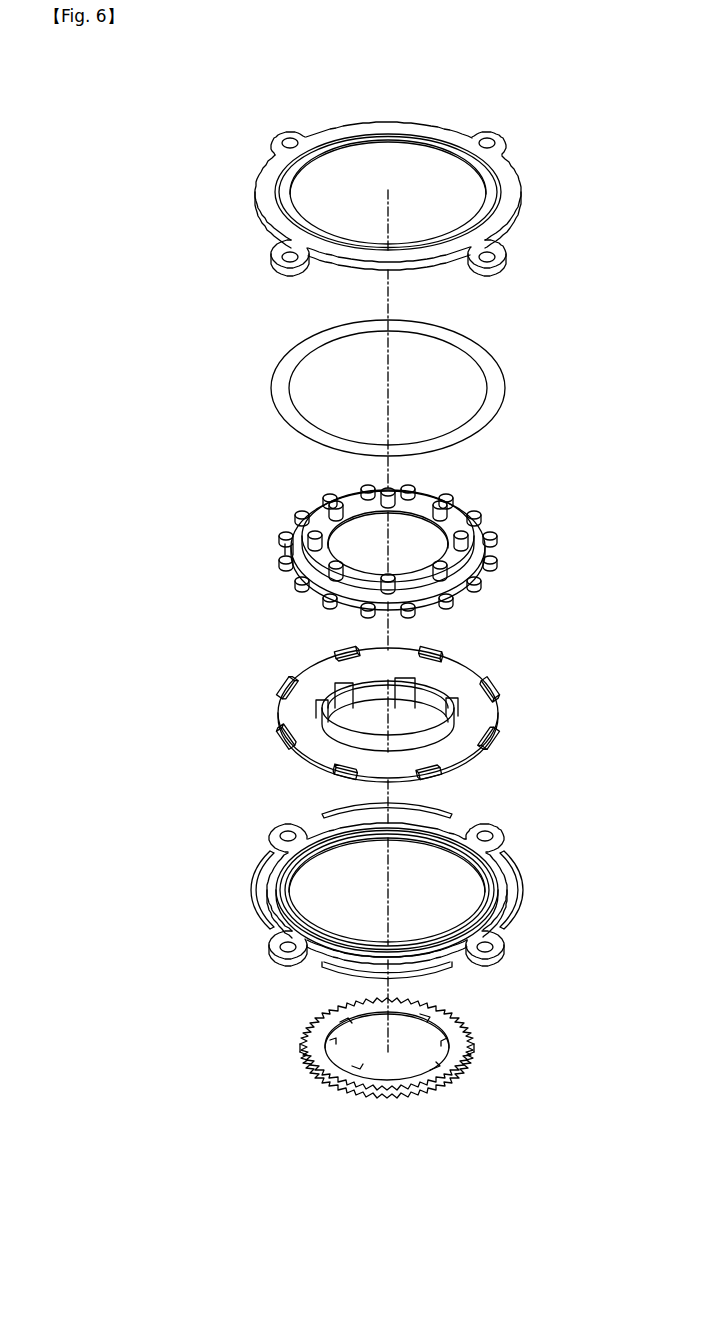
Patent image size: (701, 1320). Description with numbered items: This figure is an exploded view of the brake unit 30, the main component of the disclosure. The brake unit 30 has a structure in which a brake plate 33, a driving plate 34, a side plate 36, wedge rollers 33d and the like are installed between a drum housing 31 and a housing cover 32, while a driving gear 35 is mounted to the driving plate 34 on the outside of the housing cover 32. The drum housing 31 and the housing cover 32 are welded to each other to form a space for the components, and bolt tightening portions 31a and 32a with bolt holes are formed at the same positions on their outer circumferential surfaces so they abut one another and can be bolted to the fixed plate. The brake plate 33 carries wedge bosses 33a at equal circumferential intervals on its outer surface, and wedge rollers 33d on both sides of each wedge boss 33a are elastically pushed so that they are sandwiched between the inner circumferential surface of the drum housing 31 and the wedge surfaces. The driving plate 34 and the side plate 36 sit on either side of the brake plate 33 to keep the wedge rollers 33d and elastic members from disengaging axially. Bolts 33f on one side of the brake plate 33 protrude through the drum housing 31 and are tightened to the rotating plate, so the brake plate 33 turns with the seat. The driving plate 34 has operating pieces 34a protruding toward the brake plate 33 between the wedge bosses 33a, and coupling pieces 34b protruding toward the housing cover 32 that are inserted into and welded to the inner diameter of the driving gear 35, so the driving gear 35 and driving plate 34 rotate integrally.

The brake unit 30 is at (200, 165).
The drum housing 31 is at (421, 200).
The bolt tightening portion 31a is at (507, 258).
The housing cover 32 is at (414, 891).
The bolt tightening portion 32a is at (504, 948).
The brake plate 33 is at (362, 551).
The wedge boss 33a is at (280, 544).
The wedge roller 33d is at (280, 537).
The bolt 33f is at (310, 532).
The driving plate 34 is at (416, 705).
The operating piece 34a is at (492, 738).
The coupling piece 34b is at (450, 690).
The driving gear 35 is at (462, 1040).
The side plate 36 is at (490, 378).